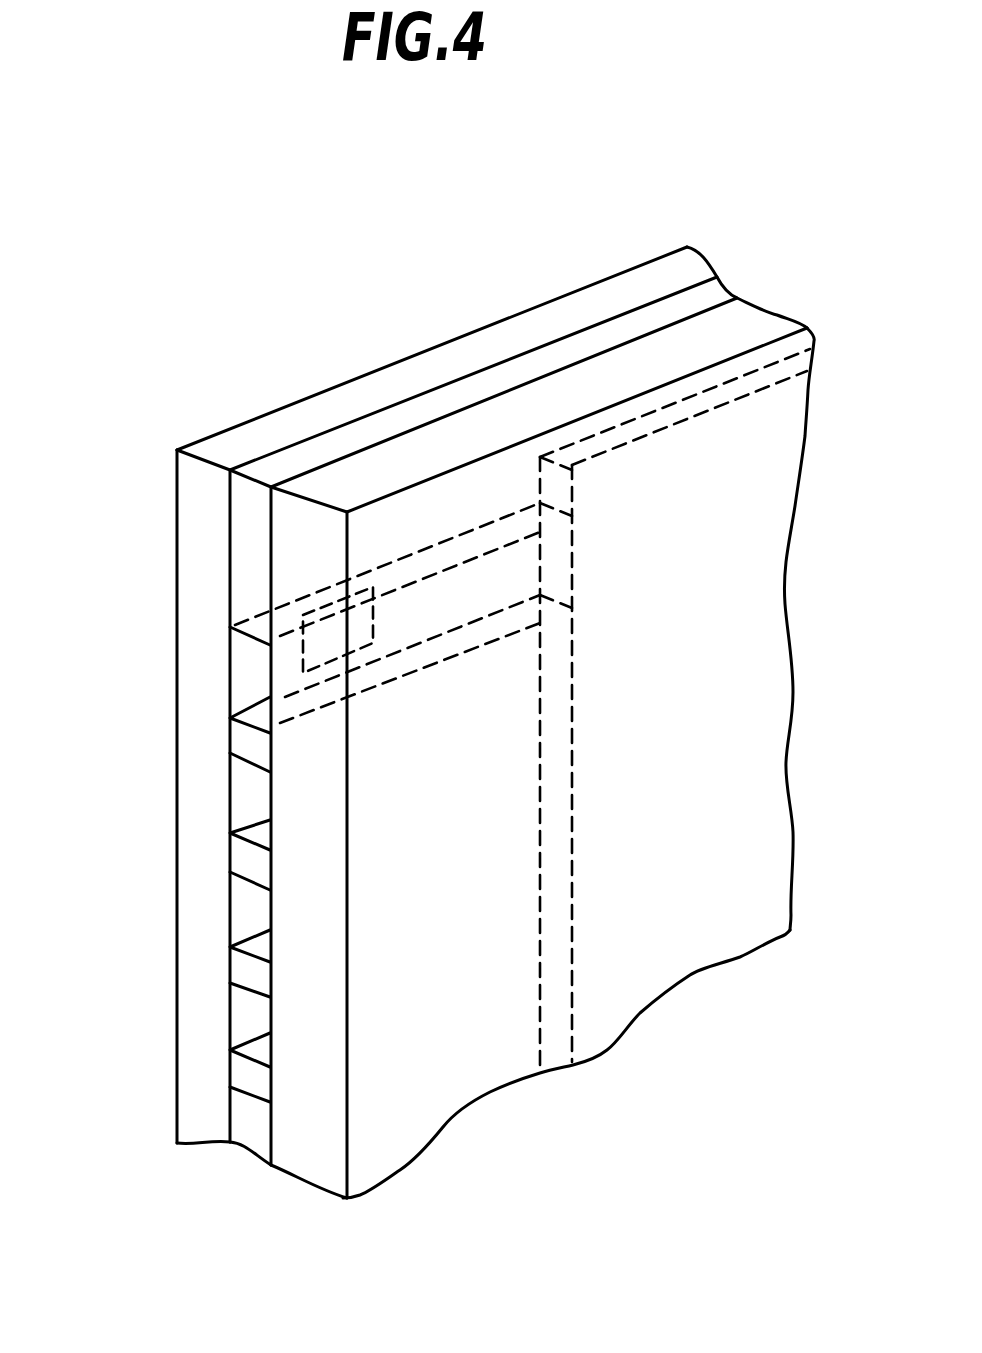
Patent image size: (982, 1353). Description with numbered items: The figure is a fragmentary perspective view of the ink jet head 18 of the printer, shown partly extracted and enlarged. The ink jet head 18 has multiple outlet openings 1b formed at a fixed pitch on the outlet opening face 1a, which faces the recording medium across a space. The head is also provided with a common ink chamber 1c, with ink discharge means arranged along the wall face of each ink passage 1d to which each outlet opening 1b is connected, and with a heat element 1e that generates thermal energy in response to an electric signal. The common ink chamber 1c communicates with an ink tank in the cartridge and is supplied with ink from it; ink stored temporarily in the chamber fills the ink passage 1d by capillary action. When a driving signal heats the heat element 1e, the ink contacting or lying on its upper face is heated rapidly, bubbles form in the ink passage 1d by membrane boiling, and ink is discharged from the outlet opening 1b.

The ink jet head 18 is at (105, 426).
The outlet opening face 1a is at (228, 968).
The outlet opening 1b is at (242, 678).
The common ink chamber 1c is at (772, 604).
The ink passage 1d is at (532, 580).
The heat element 1e is at (310, 612).